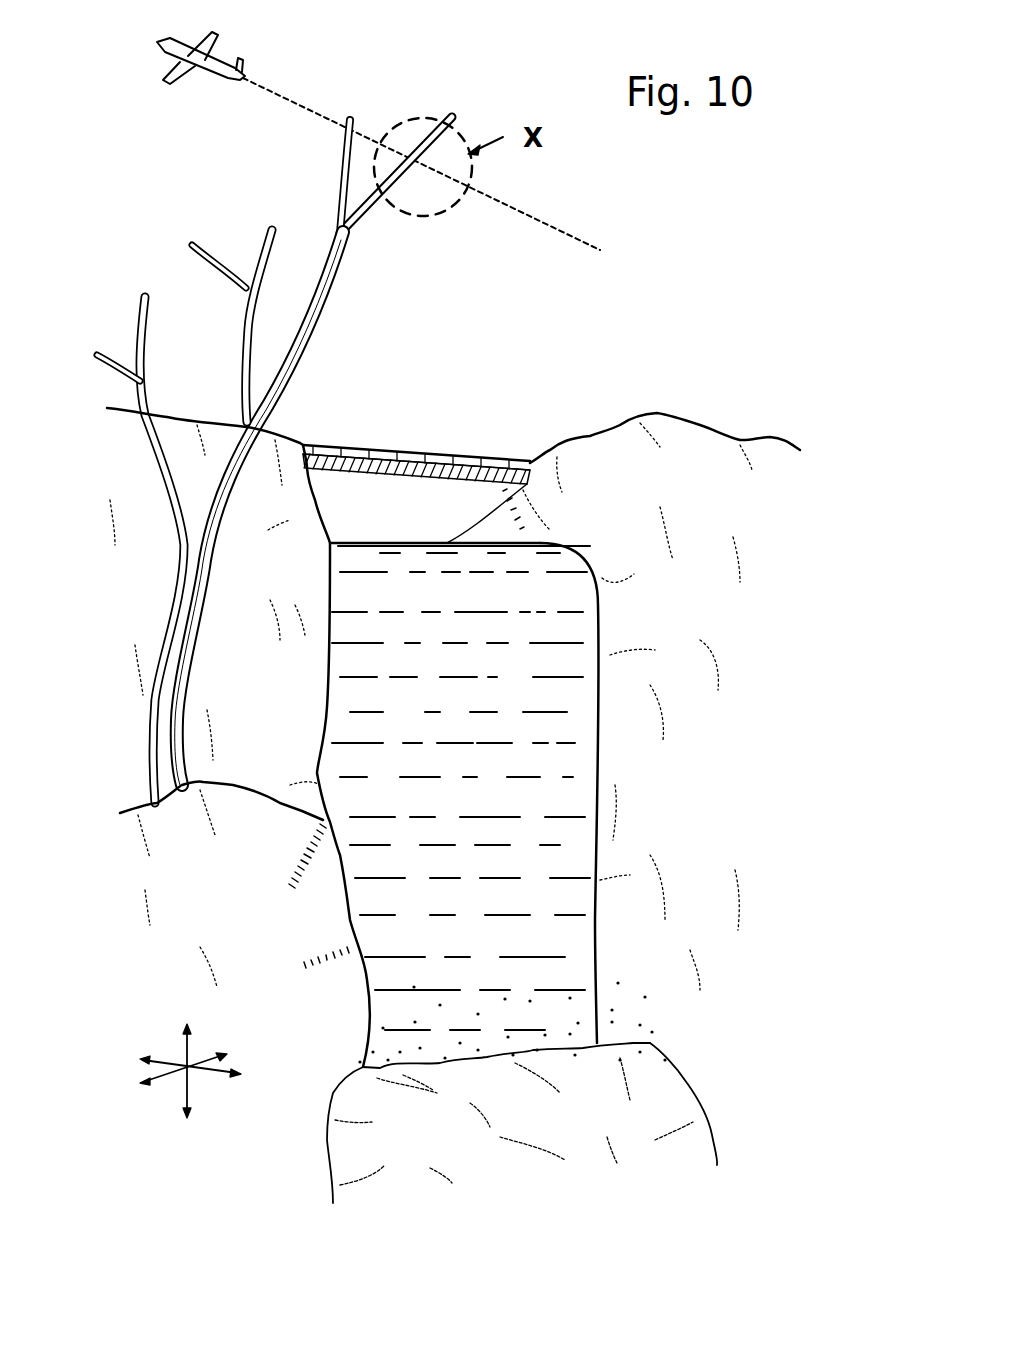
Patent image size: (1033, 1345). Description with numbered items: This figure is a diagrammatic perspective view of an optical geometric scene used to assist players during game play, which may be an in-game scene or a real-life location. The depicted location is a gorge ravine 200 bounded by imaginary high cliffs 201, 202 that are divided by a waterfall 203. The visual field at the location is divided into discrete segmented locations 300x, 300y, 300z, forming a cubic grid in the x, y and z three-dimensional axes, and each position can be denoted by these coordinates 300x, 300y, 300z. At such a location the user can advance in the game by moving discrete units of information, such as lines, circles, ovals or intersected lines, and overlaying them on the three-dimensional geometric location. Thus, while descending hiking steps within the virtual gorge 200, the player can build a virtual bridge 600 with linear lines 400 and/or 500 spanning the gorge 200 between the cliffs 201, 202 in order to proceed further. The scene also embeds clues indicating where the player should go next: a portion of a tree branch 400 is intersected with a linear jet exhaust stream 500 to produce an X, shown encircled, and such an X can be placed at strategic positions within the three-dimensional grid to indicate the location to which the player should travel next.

The gorge ravine 200 is at (688, 1040).
The high cliff 201 is at (283, 433).
The high cliff 202 is at (621, 444).
The waterfall 203 is at (601, 569).
The discrete segmented location (x coordinate) 300x is at (168, 1087).
The discrete segmented location (y coordinate) 300y is at (218, 1060).
The discrete segmented location (z coordinate) 300z is at (185, 1056).
The linear line (tree branch) 400 is at (384, 216).
The linear line (jet exhaust stream) 500 is at (319, 108).
The virtual bridge 600 is at (415, 442).